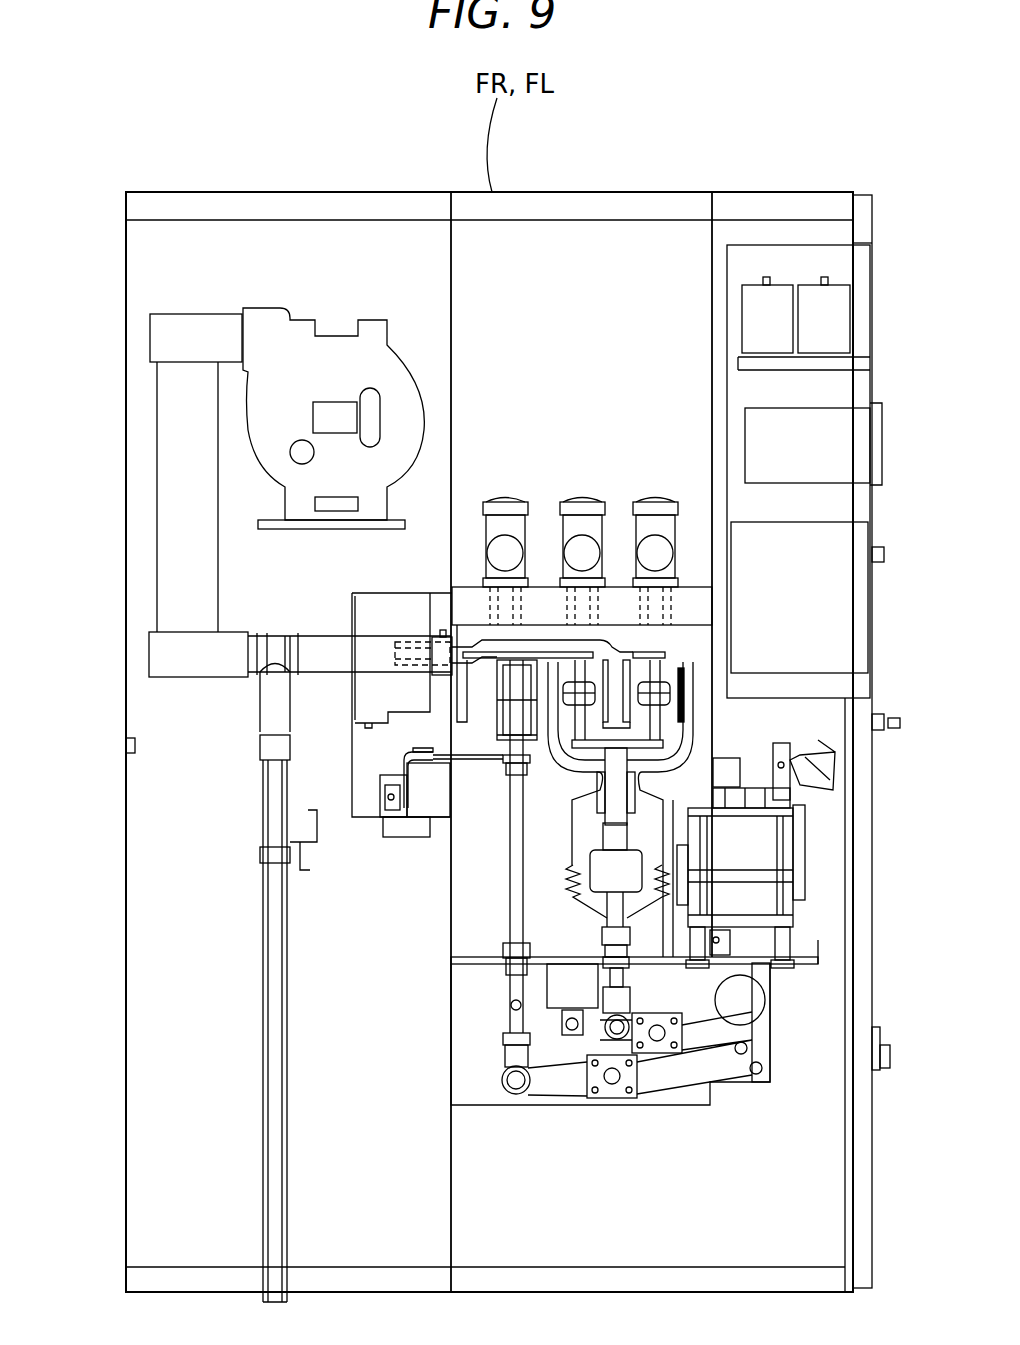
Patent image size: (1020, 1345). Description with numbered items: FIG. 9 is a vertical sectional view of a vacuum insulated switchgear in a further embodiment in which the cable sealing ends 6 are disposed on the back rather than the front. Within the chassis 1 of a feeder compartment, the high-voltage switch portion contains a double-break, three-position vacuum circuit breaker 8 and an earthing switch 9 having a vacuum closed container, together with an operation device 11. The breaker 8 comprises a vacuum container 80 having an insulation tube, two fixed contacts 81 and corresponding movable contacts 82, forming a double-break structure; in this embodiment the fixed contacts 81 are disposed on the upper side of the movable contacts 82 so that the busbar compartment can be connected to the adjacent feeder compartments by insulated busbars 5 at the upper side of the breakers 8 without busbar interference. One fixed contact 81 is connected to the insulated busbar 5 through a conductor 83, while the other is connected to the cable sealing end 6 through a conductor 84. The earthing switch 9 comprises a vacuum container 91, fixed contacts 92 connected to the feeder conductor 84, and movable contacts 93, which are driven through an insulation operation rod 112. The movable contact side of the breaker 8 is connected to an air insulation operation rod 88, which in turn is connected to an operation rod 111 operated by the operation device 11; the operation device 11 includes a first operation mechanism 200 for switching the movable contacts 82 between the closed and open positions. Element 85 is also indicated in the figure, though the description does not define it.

The chassis 1 is at (637, 210).
The insulated busbar 5 is at (505, 555).
The cable sealing end 6 is at (175, 652).
The double-break, three-position vacuum circuit breaker 8 is at (700, 745).
The earthing switch 9 is at (500, 695).
The operation device 11 is at (780, 1022).
The vacuum container 80 is at (553, 775).
The fixed contacts 81 is at (663, 690).
The movable contacts 82 is at (640, 712).
The conductor 83 is at (612, 640).
The conductor 84 is at (483, 650).
The plate 85 is at (610, 742).
The air insulation operation rod 88 is at (603, 882).
The vacuum container 91 is at (487, 715).
The fixed contacts 92 is at (440, 655).
The movable contacts 93 is at (503, 683).
The operation rod 111 is at (630, 1000).
The insulation operation rod 112 is at (495, 885).
The first operation mechanism 200 is at (765, 838).